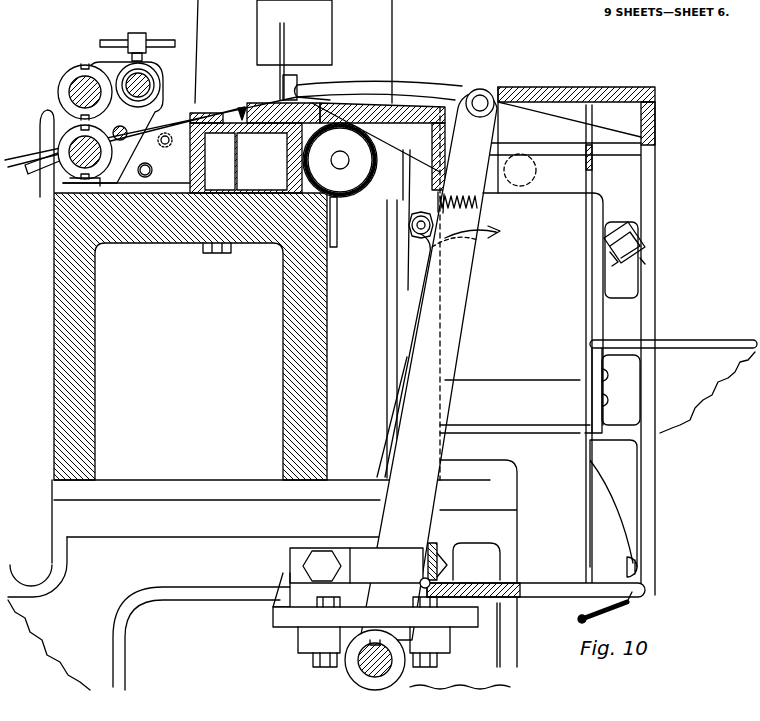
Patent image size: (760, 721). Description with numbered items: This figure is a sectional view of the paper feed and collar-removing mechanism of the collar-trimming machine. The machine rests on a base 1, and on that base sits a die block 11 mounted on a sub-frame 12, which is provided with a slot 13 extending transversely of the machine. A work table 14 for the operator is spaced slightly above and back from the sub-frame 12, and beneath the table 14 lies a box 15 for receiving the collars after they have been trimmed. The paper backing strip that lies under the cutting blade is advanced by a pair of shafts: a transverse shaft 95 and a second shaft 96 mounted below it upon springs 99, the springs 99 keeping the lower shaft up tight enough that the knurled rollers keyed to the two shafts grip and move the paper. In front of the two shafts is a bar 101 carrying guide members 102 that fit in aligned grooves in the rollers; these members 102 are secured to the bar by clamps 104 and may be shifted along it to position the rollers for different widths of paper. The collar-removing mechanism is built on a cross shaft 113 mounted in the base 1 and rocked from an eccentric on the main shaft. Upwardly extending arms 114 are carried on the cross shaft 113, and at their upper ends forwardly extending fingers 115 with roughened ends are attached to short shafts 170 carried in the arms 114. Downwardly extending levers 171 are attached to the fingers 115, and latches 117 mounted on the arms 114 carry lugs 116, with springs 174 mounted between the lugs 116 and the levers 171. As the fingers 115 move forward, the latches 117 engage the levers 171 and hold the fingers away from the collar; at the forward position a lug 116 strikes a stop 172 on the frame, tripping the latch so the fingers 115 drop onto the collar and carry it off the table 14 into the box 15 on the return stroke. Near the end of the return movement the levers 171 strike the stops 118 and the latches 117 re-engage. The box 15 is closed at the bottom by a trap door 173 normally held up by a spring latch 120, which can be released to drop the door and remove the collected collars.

The base 1 is at (202, 570).
The die block 11 is at (278, 110).
The sub-frame 12 is at (195, 153).
The slot 13 is at (318, 100).
The work table 14 is at (623, 324).
The box 15 is at (506, 441).
The shaft 95 is at (82, 80).
The second shaft 96 is at (75, 163).
The springs 99 is at (80, 185).
The bar 101 is at (150, 85).
The guide members 102 is at (100, 67).
The clamps 104 is at (143, 42).
The cross shaft 113 is at (377, 677).
The arms 114 is at (453, 292).
The fingers 115 is at (422, 90).
The lugs 116 is at (452, 208).
The latches 117 is at (503, 232).
The stops 118 is at (640, 248).
The spring latch 120 is at (580, 620).
The short shafts 170 is at (480, 100).
The levers 171 is at (473, 173).
The stops 172 is at (407, 197).
The trap door 173 is at (487, 583).
The springs 174 is at (410, 243).